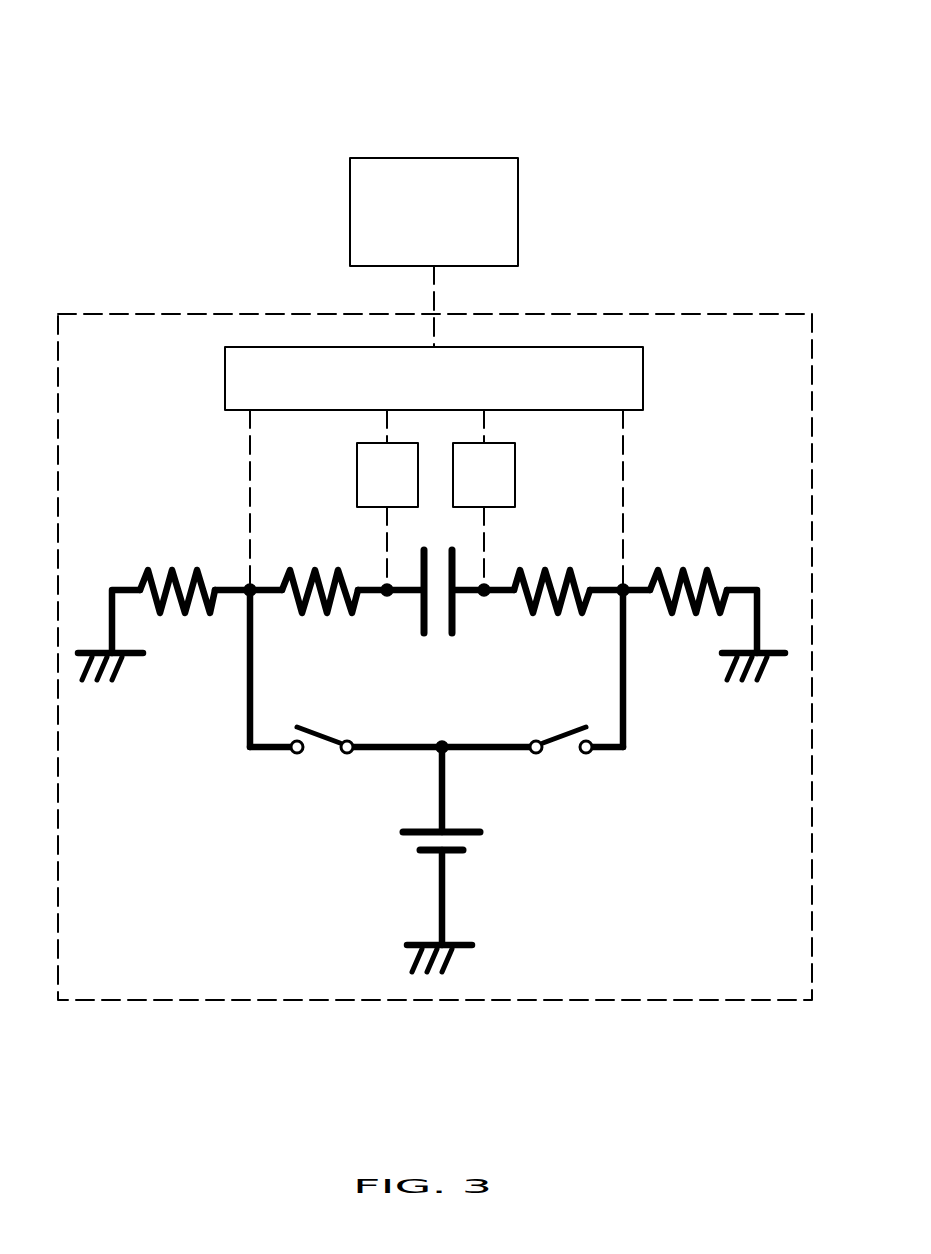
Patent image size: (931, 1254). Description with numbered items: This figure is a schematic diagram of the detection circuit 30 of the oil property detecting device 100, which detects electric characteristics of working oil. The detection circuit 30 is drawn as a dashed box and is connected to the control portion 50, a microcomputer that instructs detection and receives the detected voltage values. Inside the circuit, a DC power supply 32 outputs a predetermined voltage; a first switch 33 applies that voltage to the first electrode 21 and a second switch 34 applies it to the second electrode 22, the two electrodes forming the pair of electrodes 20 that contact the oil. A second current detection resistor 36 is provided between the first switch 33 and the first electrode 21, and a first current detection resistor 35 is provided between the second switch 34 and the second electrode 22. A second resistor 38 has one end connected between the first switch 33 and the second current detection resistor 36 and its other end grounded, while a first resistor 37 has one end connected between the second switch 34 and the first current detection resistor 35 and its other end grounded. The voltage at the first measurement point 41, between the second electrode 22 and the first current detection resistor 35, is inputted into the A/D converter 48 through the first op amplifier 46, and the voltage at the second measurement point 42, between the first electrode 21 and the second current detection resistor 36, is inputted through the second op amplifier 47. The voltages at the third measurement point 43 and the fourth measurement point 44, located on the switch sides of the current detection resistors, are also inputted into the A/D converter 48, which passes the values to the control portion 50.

The oil property detecting device 100 is at (600, 80).
The detection circuit 30 is at (146, 313).
The control portion 50 is at (507, 190).
The A/D converter 48 is at (623, 378).
The second op amplifier 47 is at (360, 475).
The first op amplifier 46 is at (508, 473).
The second resistor 38 is at (172, 568).
The second current detection resistor 36 is at (313, 568).
The first current detection resistor 35 is at (545, 568).
The first resistor 37 is at (683, 568).
The fourth measurement point 44 is at (250, 585).
The second measurement point 42 is at (385, 586).
The first measurement point 41 is at (486, 586).
The third measurement point 43 is at (625, 586).
The pair of electrodes 20 is at (442, 637).
The first electrode 21 is at (422, 627).
The second electrode 22 is at (480, 606).
The first switch 33 is at (318, 758).
The second switch 34 is at (558, 758).
The DC power supply 32 is at (407, 843).